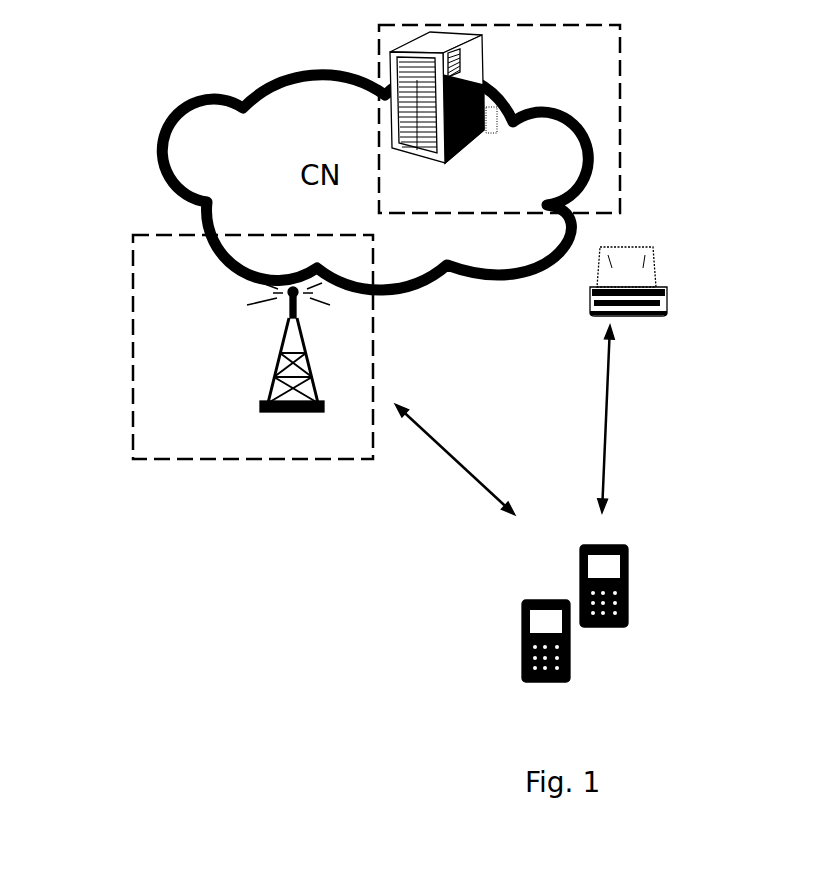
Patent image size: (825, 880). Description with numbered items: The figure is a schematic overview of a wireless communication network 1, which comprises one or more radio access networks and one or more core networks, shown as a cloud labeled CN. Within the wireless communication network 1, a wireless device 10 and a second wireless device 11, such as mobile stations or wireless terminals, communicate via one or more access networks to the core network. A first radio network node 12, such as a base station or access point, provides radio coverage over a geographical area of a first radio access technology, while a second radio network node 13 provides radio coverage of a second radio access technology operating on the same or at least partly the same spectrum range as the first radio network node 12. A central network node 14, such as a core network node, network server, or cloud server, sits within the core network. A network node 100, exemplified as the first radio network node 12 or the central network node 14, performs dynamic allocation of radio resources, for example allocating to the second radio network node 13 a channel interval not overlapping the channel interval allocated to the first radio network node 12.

The wireless communication network 1 is at (705, 133).
The network node 100 is at (379, 70).
The wireless device 10 is at (628, 617).
The second wireless device 11 is at (522, 660).
The first radio network node 12 is at (273, 397).
The second radio network node 13 is at (653, 287).
The central network node 14 is at (465, 150).